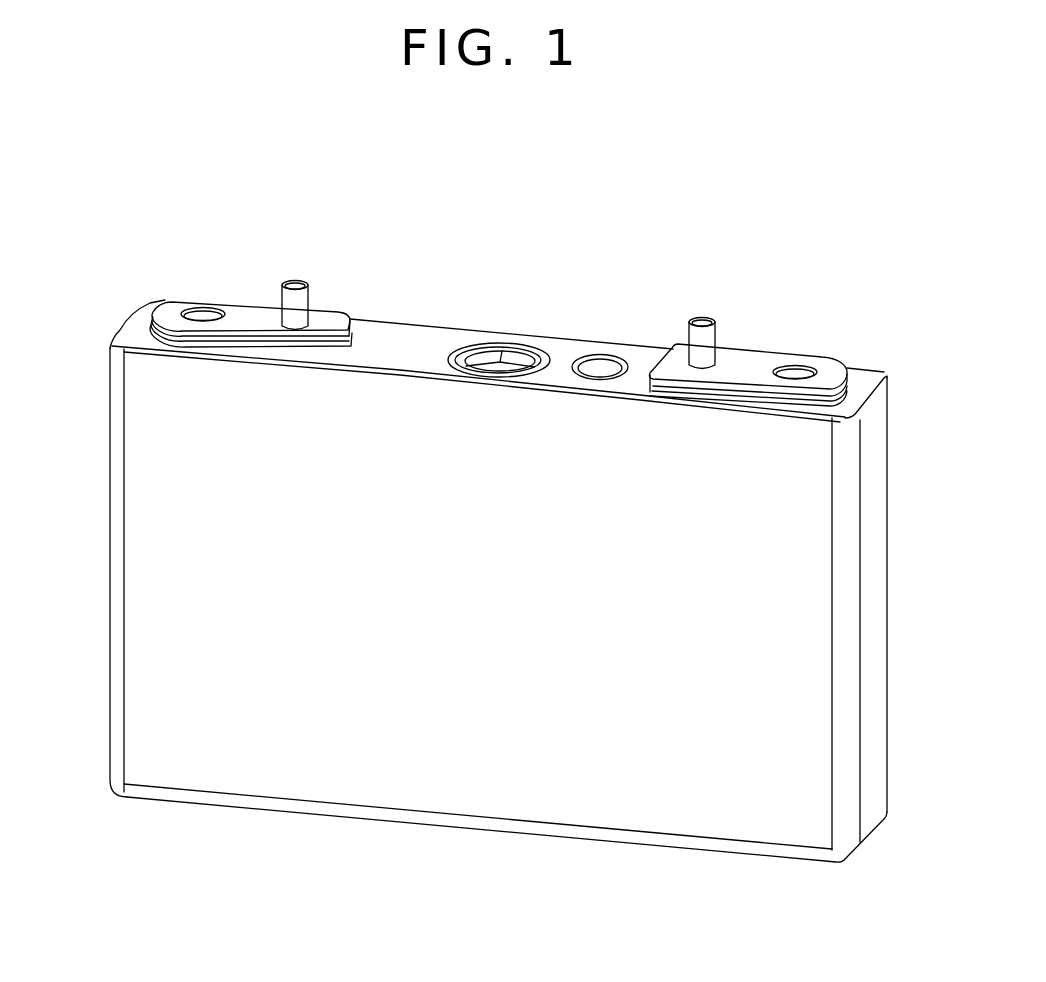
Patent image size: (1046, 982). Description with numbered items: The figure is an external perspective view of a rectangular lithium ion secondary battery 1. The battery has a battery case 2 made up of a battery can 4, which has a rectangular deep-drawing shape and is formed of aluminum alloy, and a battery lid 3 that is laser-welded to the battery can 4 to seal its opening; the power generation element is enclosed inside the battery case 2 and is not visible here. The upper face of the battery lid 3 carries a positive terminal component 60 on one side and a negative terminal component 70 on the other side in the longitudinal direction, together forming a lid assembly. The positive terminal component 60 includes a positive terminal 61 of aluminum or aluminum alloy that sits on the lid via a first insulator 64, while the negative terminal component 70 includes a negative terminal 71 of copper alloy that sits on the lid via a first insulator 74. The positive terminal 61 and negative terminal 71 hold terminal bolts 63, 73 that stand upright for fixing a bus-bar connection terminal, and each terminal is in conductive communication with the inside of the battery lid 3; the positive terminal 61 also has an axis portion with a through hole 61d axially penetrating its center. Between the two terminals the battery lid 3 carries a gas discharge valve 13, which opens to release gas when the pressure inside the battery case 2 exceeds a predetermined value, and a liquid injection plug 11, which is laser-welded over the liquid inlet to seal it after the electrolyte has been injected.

The lithium ion secondary battery 1 is at (650, 223).
The battery case 2 is at (440, 229).
The battery lid 3 is at (380, 337).
The battery can 4 is at (425, 393).
The liquid injection plug 11 is at (600, 355).
The gas discharge valve 13 is at (500, 344).
The positive terminal component 60 is at (222, 233).
The positive terminal 61 is at (263, 318).
The through hole 61d is at (202, 316).
The terminal bolt 63 is at (292, 280).
The first insulator 64 is at (120, 335).
The negative terminal component 70 is at (792, 287).
The negative terminal 71 is at (748, 357).
The terminal bolt 73 is at (698, 317).
The first insulator 74 is at (825, 398).